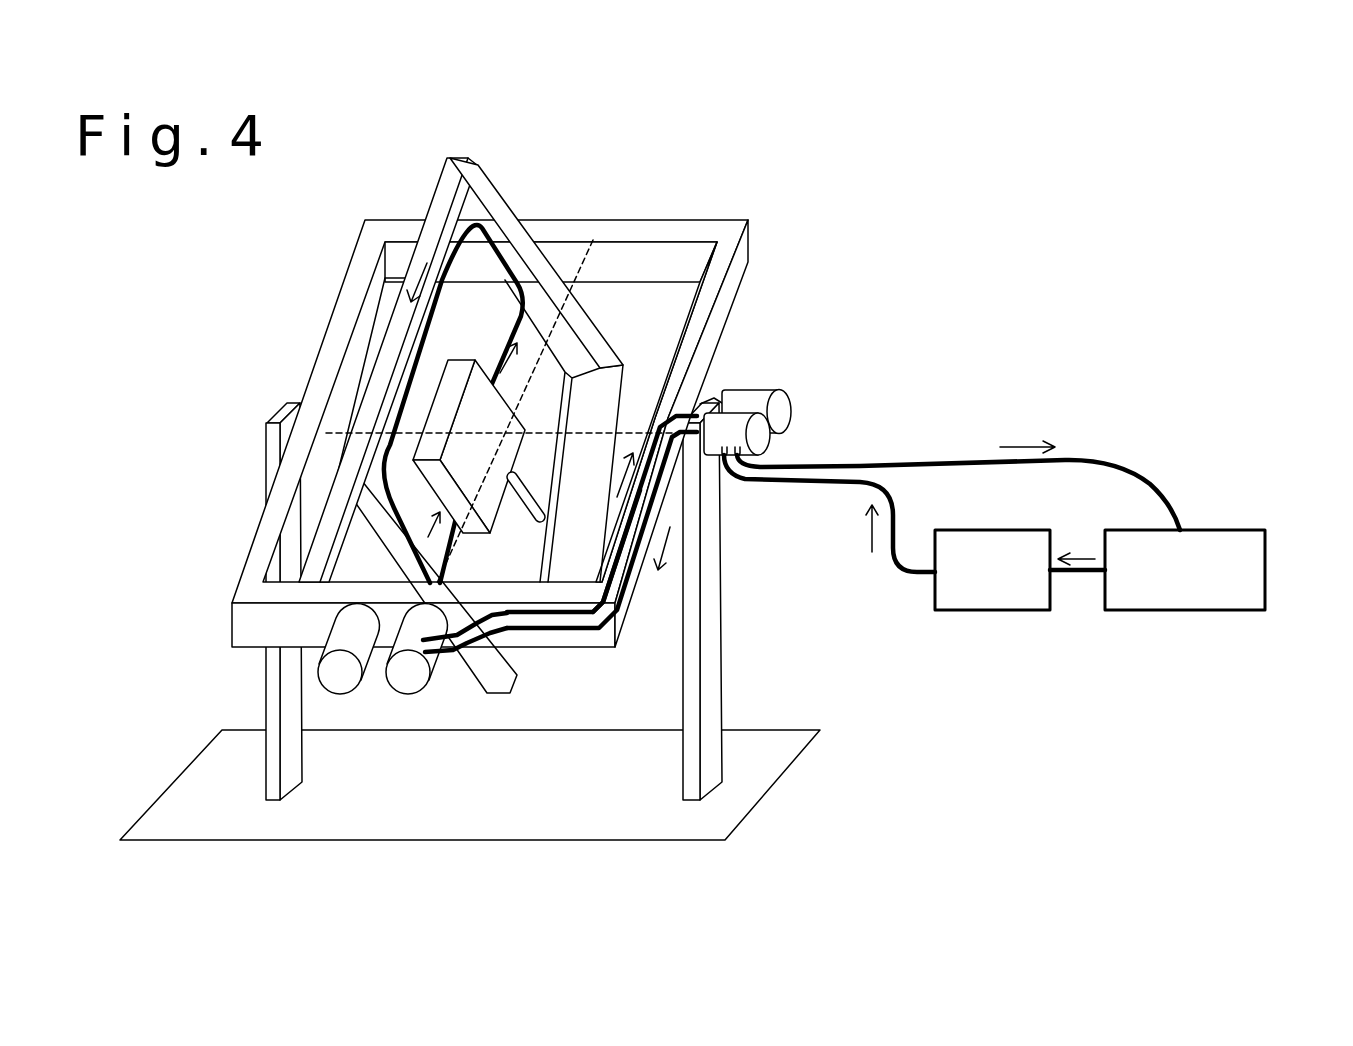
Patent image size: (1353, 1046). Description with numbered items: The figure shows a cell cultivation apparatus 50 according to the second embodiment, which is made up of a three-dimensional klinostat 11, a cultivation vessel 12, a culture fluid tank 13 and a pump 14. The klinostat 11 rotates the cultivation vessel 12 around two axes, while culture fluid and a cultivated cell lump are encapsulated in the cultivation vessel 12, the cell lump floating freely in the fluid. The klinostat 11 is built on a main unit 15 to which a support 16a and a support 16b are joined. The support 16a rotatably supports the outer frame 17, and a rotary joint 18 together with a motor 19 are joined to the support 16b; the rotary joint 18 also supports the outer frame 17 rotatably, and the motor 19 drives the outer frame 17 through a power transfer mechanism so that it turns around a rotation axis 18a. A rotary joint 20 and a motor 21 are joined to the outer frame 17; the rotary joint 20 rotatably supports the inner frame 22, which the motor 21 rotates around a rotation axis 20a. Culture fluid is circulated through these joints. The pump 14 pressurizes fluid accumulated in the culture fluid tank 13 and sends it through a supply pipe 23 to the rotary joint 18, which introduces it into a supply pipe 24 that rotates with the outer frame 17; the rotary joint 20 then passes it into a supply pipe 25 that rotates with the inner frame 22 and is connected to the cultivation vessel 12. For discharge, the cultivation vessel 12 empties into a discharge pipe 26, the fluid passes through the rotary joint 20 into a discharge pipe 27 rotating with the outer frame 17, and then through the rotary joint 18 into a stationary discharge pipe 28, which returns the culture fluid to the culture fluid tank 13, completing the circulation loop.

The 3-dimensional klinostat 11 is at (658, 232).
The cultivation vessel 12 is at (453, 378).
The culture fluid tank 13 is at (1270, 575).
The pump 14 is at (990, 610).
The main unit 15 is at (541, 813).
The support 16a is at (272, 443).
The support 16b is at (710, 600).
The outer frame 17 is at (703, 317).
The rotary joint 18 is at (757, 400).
The rotation axis 18a is at (627, 433).
The motor 19 is at (730, 418).
The rotary joint 20 is at (408, 670).
The rotation axis 20a is at (593, 240).
The motor 21 is at (334, 670).
The inner frame 22 is at (479, 185).
The supply pipe 23 is at (897, 505).
The supply pipe 24 is at (568, 633).
The supply pipe 25 is at (500, 623).
The discharge pipe 26 is at (447, 268).
The discharge pipe 27 is at (618, 598).
The discharge pipe 28 is at (1073, 460).
The cell cultivation apparatus 50 is at (764, 146).